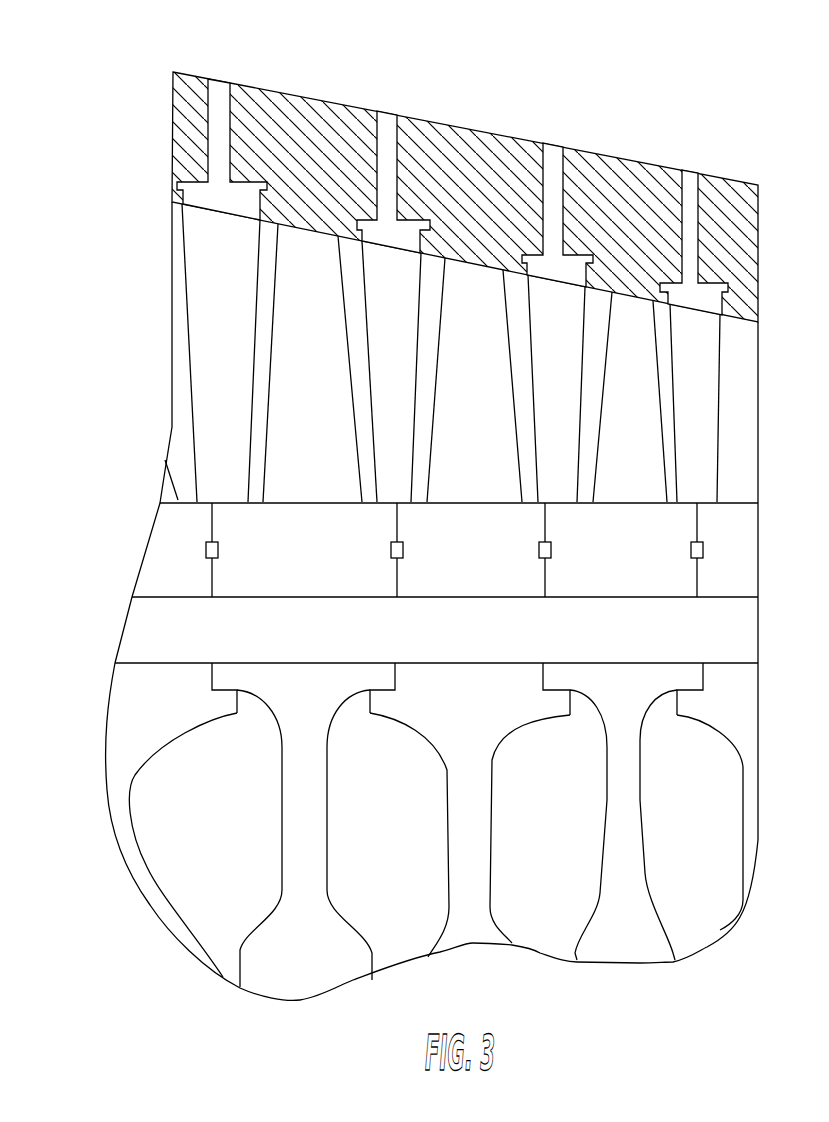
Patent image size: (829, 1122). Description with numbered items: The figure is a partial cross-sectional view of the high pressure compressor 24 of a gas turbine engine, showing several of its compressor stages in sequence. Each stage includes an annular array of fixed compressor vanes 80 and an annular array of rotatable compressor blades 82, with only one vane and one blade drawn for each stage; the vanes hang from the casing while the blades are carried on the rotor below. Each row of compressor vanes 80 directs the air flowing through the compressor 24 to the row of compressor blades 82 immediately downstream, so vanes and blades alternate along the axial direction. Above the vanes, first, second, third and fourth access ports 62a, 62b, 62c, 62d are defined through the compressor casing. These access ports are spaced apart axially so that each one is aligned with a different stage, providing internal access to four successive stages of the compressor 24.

The high pressure compressor 24 is at (108, 100).
The first access port 62a is at (215, 72).
The second access port 62b is at (383, 105).
The third access port 62c is at (554, 144).
The fourth access port 62d is at (691, 169).
The compressor vane 80 is at (233, 339).
The compressor blade 82 is at (325, 366).